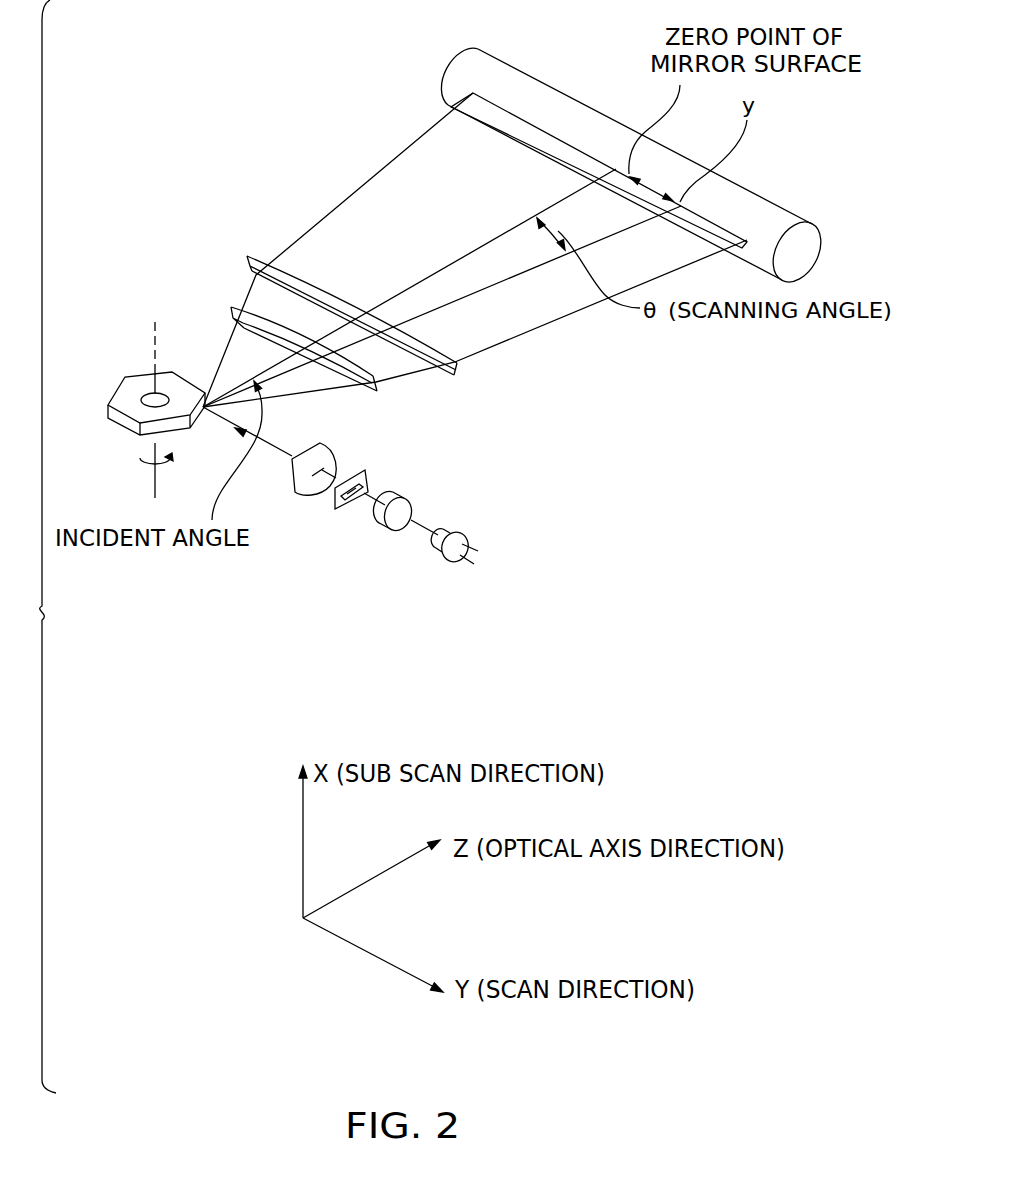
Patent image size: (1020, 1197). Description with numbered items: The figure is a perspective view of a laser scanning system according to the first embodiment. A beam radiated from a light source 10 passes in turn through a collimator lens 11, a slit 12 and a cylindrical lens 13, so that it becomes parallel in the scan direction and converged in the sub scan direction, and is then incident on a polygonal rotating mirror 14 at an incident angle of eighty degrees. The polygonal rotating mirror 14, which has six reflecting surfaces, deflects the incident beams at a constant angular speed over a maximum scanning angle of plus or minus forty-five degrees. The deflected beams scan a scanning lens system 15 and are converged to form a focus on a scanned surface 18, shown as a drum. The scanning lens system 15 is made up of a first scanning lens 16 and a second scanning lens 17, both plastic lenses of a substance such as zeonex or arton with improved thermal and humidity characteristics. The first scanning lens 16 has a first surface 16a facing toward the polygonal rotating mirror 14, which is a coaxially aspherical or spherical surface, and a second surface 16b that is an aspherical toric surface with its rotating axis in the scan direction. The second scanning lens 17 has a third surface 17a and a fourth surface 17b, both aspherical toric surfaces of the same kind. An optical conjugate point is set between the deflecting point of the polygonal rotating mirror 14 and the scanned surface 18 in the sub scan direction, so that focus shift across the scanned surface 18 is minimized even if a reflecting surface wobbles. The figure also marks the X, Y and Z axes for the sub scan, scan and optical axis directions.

The light source 10 is at (432, 541).
The collimator lens 11 is at (412, 512).
The slit 12 is at (367, 482).
The cylindrical lens 13 is at (313, 476).
The polygonal rotating mirror 14 is at (135, 387).
The scanning lens system 15 is at (236, 266).
The first scanning lens 16 is at (292, 329).
The first surface 16a is at (230, 320).
The second surface 16b is at (256, 302).
The second scanning lens 17 is at (378, 281).
The third surface 17a is at (251, 270).
The fourth surface 17b is at (298, 275).
The scanned surface 18 is at (567, 139).